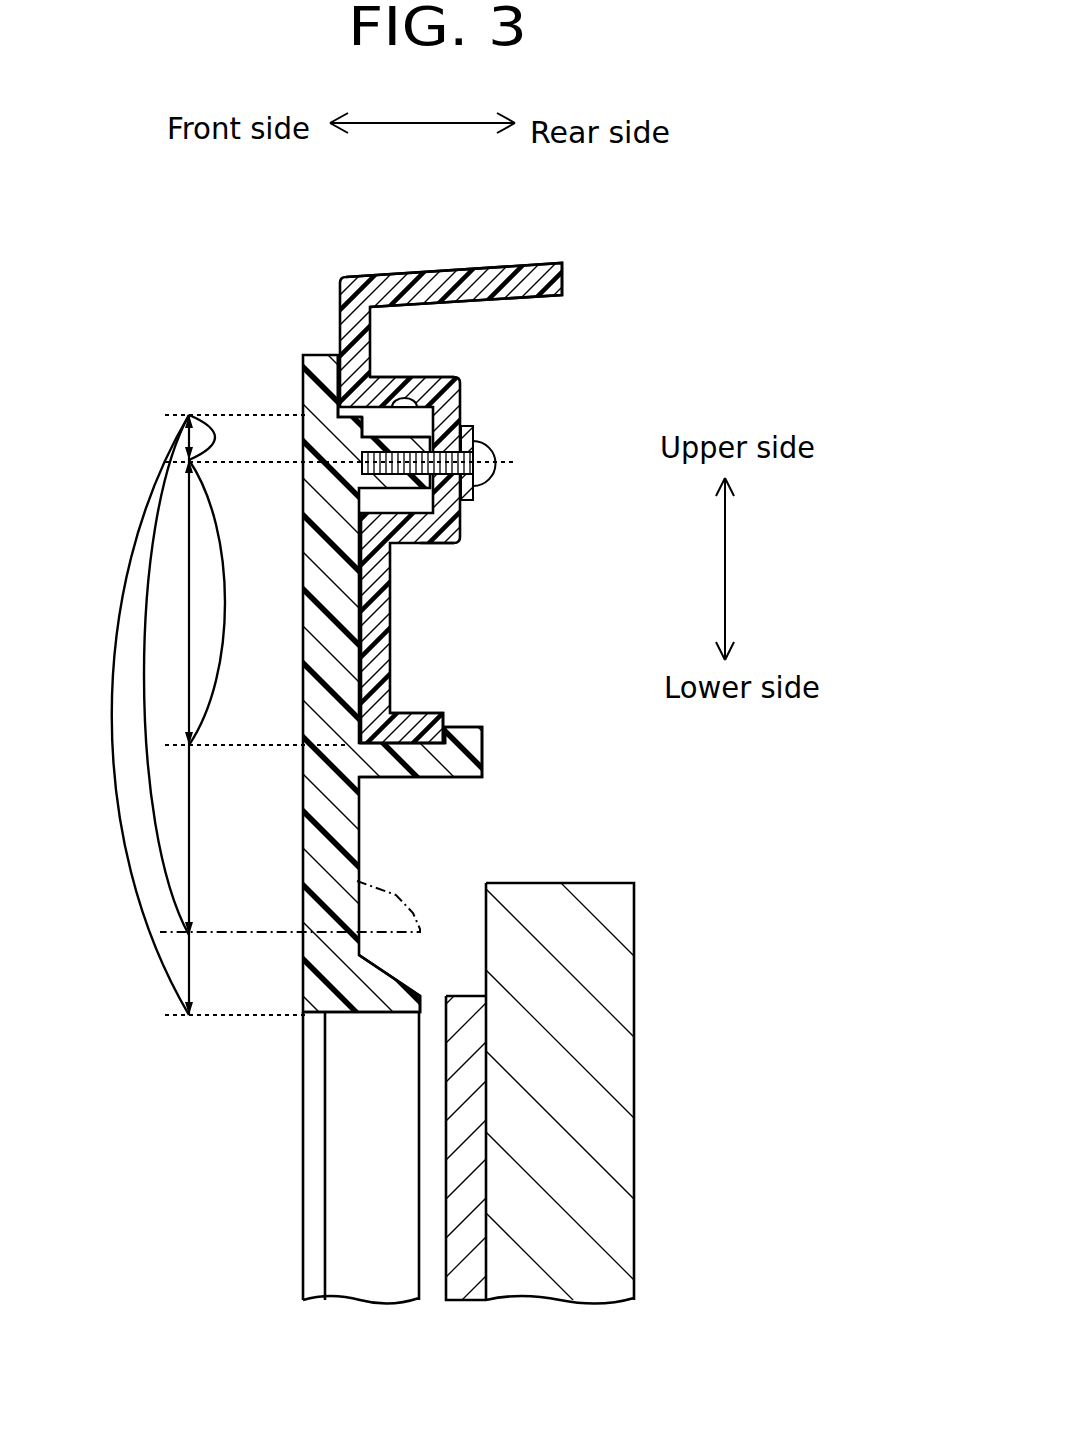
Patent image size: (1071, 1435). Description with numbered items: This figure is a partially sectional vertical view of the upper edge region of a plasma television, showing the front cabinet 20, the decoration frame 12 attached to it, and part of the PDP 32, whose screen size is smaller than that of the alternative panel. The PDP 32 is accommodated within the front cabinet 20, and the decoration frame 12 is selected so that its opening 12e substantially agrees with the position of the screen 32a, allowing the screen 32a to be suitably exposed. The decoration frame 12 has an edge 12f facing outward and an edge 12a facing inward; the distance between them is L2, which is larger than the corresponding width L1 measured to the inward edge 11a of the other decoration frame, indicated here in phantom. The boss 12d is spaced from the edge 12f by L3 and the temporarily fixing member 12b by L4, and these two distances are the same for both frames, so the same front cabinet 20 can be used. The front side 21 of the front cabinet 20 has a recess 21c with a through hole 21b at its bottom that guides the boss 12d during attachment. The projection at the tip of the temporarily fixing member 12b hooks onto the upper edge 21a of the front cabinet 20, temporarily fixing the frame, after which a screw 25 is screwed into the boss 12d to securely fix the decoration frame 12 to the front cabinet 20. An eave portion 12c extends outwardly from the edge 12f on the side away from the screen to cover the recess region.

The edge facing inward 11a is at (396, 913).
The decoration frame 12 is at (305, 797).
The edge facing inward 12a is at (373, 1005).
The temporarily fixing member 12b is at (444, 776).
The eave portion 12c is at (312, 363).
The boss 12d is at (447, 544).
The opening 12e is at (343, 1248).
The edge facing outward 12f is at (345, 425).
The front cabinet 20 is at (492, 264).
The front side 21 is at (337, 298).
The upper edge 21a is at (427, 708).
The through hole 21b is at (475, 492).
The recess 21c is at (443, 374).
The screw 25 is at (488, 446).
The PDP 32 is at (625, 975).
The screen 32a is at (452, 1144).
The distance from edge 11f to edge 11a L1 is at (166, 675).
The distance from edge 12f to edge 12a L2 is at (134, 715).
The distance from outward edge to boss L3 is at (219, 437).
The distance from outward edge to temporarily fixing member L4 is at (228, 602).